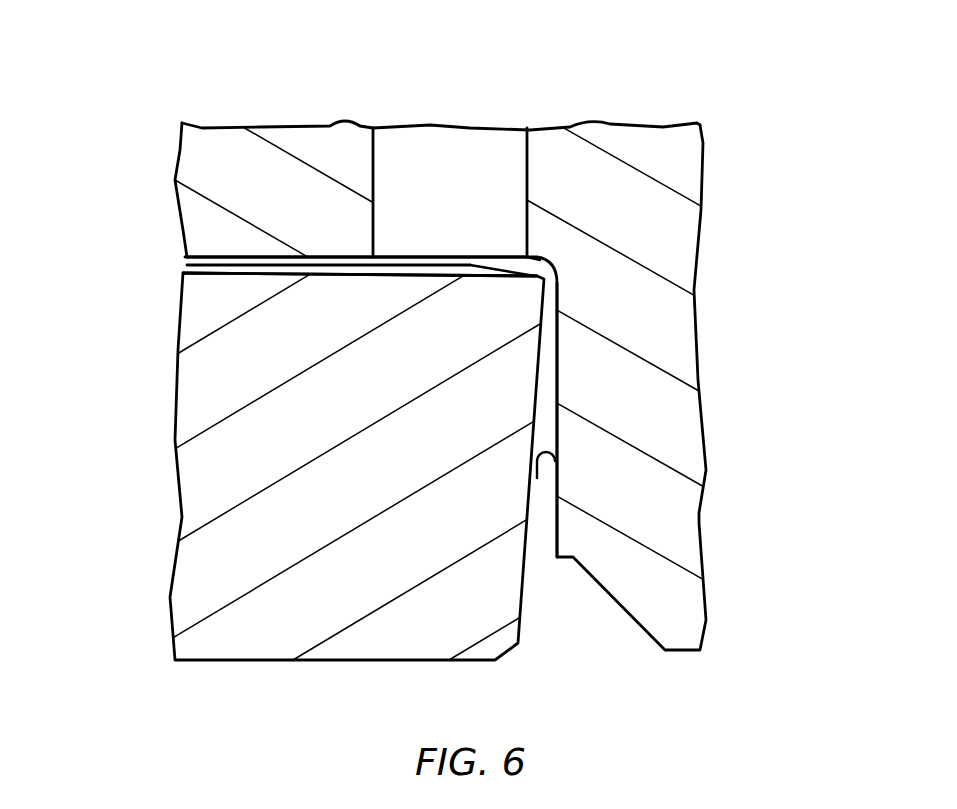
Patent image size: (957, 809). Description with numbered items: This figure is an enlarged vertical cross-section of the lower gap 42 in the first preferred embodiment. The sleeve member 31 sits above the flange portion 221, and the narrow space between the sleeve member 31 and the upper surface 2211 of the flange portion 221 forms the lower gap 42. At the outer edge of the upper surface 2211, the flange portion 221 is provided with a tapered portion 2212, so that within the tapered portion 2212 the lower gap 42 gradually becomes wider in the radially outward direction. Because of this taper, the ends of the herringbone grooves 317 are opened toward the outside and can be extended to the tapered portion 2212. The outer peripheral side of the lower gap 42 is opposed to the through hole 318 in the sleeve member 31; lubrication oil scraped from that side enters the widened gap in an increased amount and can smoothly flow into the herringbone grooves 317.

The sleeve member 31 is at (615, 190).
The through hole 318 is at (463, 173).
The herringbone grooves 317 is at (356, 288).
The tapered portion 2212 is at (535, 246).
The lower gap 42 is at (186, 262).
The upper surface 2211 is at (425, 262).
The flange portion 221 is at (370, 493).